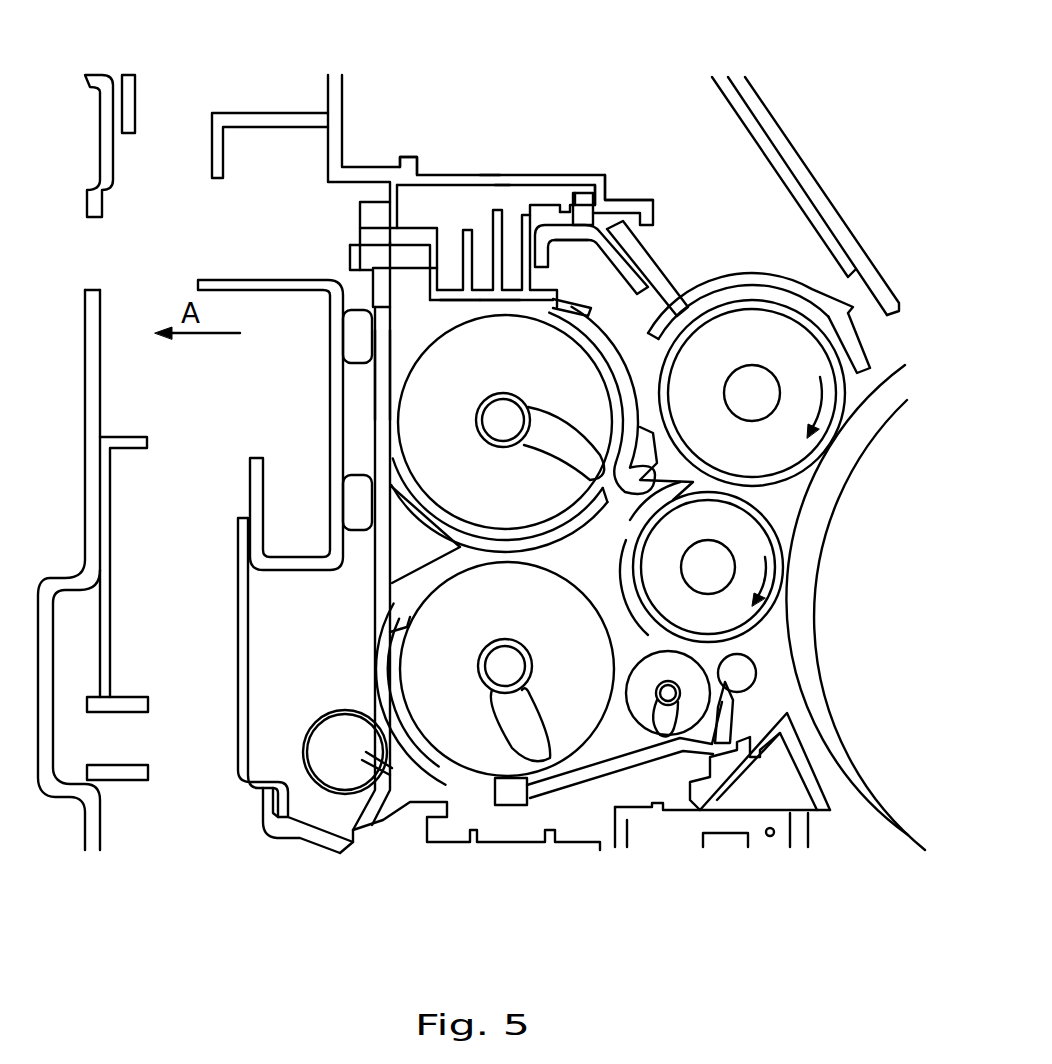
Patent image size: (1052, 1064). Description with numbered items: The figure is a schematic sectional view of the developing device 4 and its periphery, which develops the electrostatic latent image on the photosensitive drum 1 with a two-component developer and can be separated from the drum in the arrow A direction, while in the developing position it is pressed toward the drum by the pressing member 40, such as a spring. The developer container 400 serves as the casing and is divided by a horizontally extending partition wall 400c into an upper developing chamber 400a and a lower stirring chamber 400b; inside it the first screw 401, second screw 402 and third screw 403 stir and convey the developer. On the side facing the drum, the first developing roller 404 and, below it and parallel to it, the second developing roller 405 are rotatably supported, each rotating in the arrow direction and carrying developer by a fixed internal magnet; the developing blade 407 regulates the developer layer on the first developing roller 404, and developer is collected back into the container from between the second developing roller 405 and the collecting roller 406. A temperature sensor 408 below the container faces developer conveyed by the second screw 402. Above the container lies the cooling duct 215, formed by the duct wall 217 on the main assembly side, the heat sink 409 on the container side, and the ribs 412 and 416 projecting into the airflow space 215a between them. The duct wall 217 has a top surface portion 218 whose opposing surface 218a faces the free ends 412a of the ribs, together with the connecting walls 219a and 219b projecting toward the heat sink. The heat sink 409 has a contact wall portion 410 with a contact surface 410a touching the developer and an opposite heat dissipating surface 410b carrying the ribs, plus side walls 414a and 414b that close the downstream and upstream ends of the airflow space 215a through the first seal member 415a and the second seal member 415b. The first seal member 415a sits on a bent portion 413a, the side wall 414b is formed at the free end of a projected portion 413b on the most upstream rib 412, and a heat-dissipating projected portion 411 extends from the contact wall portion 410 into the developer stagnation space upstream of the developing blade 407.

The photosensitive drum 1 is at (830, 744).
The developing device 4 is at (257, 243).
The pressing member 40 is at (356, 337).
The cooling duct 215 is at (510, 82).
The airflow space 215a is at (420, 210).
The duct wall 217 is at (612, 164).
The top surface portion 218 is at (486, 173).
The opposing surface 218a is at (502, 185).
The connecting wall 219a is at (398, 200).
The connecting wall 219b is at (600, 172).
The developer container 400 is at (433, 773).
The developing chamber 400a is at (395, 371).
The stirring chamber 400b is at (612, 738).
The partition wall 400c is at (490, 547).
The first screw 401 is at (405, 411).
The second screw 402 is at (408, 658).
The third screw 403 is at (682, 737).
The first developing roller 404 is at (793, 377).
The second developing roller 405 is at (742, 547).
The collecting roller 406 is at (743, 668).
The developing blade 407 is at (742, 278).
The temperature sensor 408 is at (512, 797).
The heat sink 409 is at (452, 310).
The contact wall portion 410 is at (538, 302).
The contact surface 410a is at (493, 302).
The heat dissipating surface 410b is at (517, 282).
The heat-dissipating projected portion 411 is at (588, 313).
The rib 412 is at (600, 231).
The free ends 412a is at (525, 233).
The bent portion 413a is at (360, 238).
The projected portion 413b is at (541, 222).
The side wall 414a is at (362, 215).
The side wall 414b is at (562, 222).
The first seal member 415a is at (372, 196).
The second seal member 415b is at (582, 210).
The rib 416 is at (352, 262).